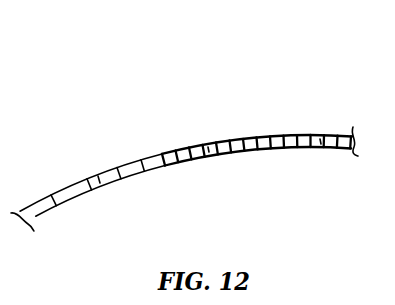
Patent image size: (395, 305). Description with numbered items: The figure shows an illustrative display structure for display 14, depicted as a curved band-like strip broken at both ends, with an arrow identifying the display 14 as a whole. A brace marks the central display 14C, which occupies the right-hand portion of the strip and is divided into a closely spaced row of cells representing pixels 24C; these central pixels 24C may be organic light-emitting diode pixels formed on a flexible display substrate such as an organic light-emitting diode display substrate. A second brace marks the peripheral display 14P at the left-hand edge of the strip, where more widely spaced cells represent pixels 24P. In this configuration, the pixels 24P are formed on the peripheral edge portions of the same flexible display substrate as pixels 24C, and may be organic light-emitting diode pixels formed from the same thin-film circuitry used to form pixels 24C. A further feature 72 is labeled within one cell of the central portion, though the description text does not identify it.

The display 14 is at (188, 68).
The peripheral display 14P is at (159, 143).
The central display 14C is at (348, 124).
The peripheral pixels 24P is at (72, 192).
The central pixels 24C is at (322, 144).
The cell feature 72 is at (211, 158).